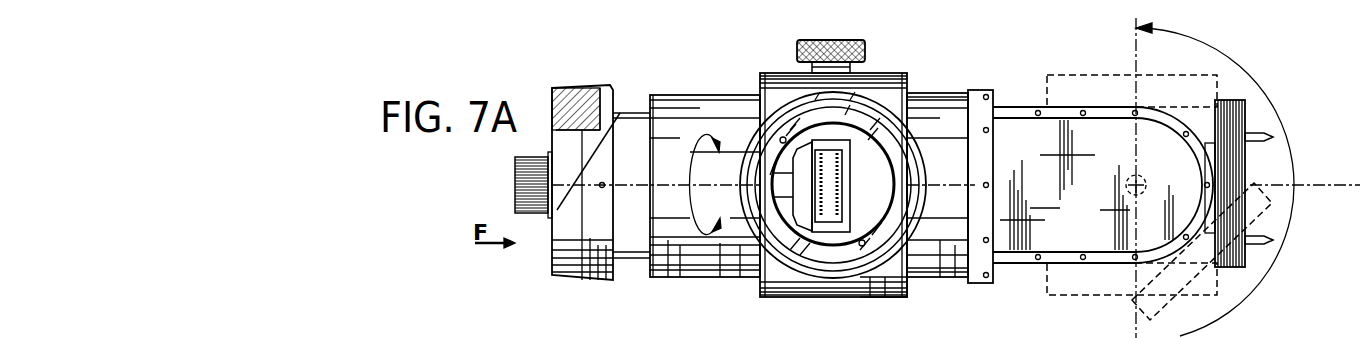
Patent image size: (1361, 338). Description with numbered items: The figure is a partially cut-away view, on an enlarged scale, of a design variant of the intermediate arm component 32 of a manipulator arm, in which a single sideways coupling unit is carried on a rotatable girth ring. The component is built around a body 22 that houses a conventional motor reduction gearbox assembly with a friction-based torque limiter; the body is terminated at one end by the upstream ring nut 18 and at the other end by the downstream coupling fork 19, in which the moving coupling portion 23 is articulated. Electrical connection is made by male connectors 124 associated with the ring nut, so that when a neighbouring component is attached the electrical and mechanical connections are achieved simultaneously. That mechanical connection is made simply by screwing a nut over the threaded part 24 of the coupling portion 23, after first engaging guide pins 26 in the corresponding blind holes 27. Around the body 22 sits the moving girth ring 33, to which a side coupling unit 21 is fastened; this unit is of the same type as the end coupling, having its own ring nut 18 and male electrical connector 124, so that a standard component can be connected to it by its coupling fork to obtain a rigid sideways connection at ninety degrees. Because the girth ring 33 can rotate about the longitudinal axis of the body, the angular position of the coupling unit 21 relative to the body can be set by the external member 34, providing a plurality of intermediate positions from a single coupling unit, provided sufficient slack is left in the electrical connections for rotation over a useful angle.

The male connector 124 is at (518, 214).
The ring nut 18 is at (570, 255).
The body 22 is at (670, 247).
The component 32 is at (713, 288).
The intermediate coupling unit 21 is at (770, 95).
The blind holes 27 is at (779, 138).
The external member 34 is at (865, 57).
The moving girth ring 33 is at (885, 278).
The coupling fork 19 is at (1043, 222).
The coupling portion 23 is at (1207, 237).
The threaded part 24 is at (1233, 100).
The guide pins 26 is at (1257, 132).